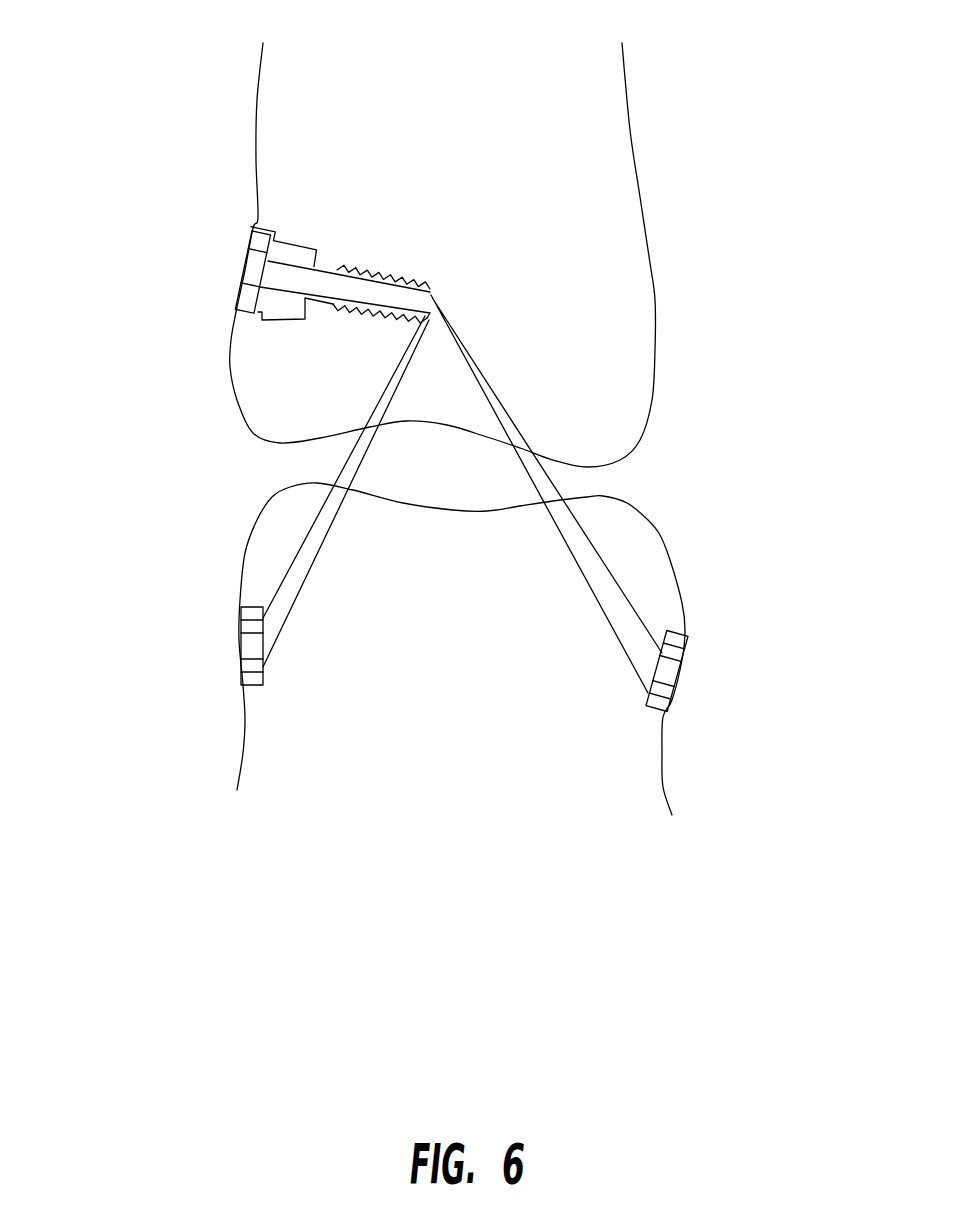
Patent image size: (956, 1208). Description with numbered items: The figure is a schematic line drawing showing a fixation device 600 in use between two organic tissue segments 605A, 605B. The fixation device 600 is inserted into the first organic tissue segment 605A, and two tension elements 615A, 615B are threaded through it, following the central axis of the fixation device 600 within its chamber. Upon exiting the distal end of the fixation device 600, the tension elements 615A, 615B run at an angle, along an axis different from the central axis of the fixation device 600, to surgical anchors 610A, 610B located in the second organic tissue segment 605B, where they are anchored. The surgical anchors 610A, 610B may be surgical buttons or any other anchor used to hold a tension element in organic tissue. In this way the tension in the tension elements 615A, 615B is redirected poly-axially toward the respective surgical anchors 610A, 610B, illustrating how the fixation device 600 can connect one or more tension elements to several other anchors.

The fixation device 600 is at (247, 283).
The organic tissue segment 605A is at (612, 353).
The organic tissue segment 605B is at (648, 597).
The surgical anchor 610A is at (241, 658).
The surgical anchor 610B is at (670, 675).
The tension element 615A is at (300, 551).
The tension element 615B is at (573, 557).